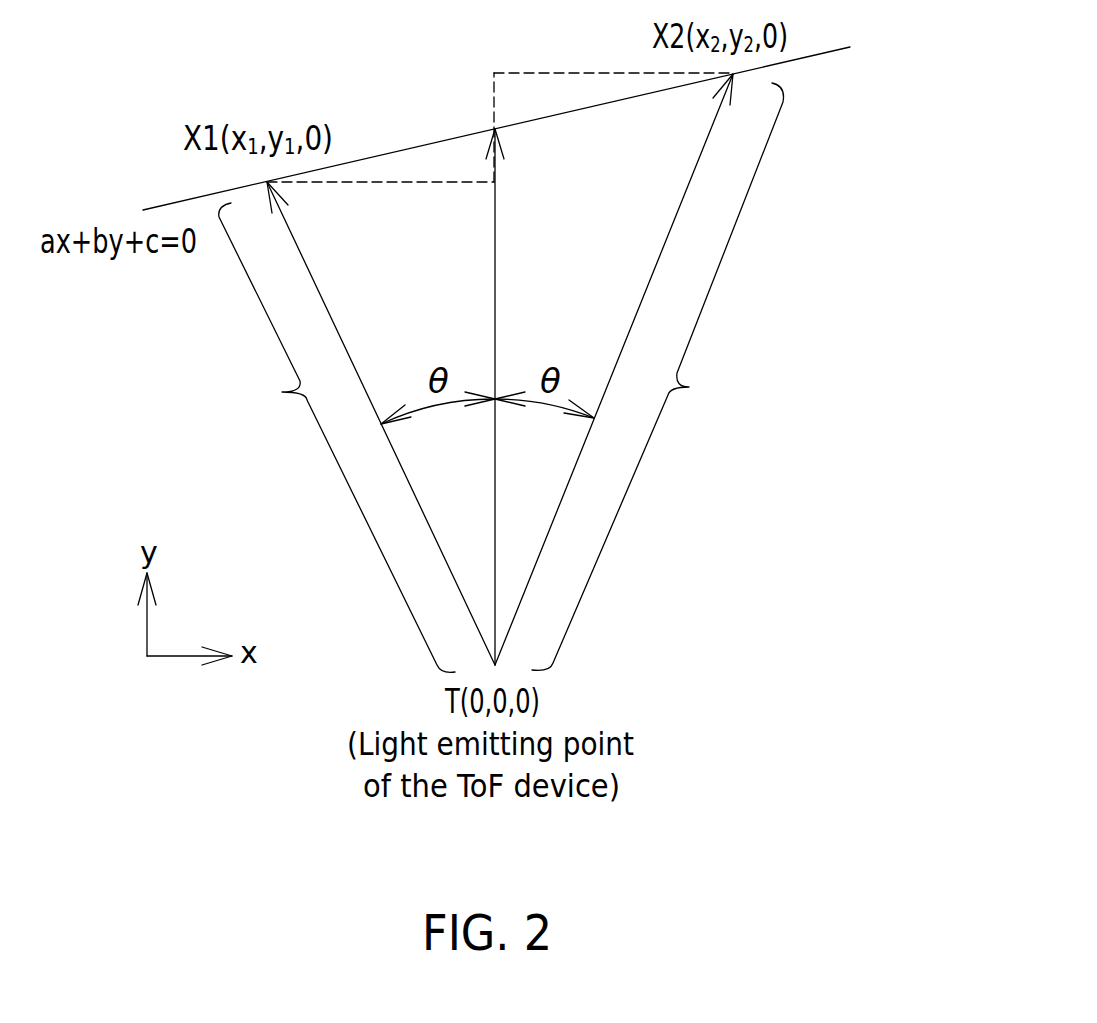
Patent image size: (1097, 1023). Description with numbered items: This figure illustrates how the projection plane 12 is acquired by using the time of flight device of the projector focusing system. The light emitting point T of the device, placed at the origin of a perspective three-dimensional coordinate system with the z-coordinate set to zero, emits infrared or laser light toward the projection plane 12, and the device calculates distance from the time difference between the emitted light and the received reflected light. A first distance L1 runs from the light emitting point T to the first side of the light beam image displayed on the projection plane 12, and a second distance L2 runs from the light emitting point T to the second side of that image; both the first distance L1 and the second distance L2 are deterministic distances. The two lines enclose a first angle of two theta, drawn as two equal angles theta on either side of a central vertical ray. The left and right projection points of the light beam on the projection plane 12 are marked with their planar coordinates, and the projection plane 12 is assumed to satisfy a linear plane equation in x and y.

The projection plane 12 is at (850, 47).
The first distance L1 is at (337, 437).
The second distance L2 is at (658, 376).